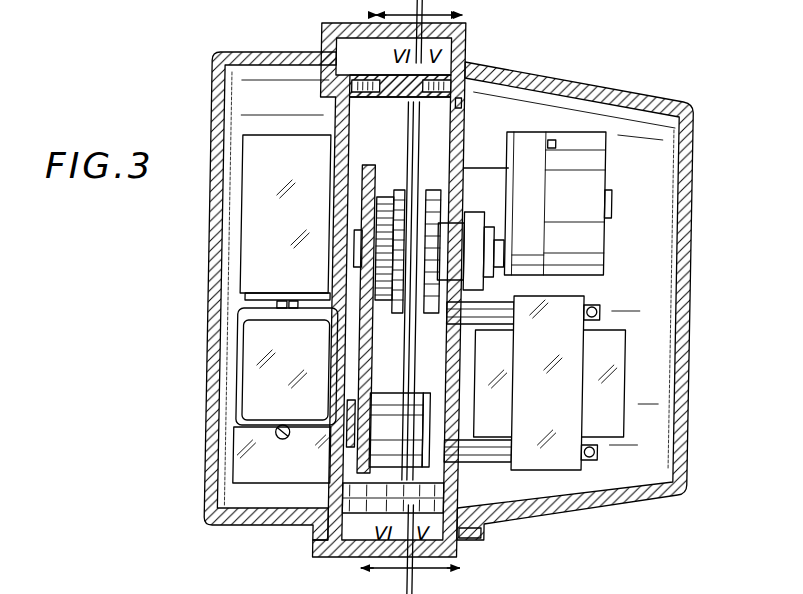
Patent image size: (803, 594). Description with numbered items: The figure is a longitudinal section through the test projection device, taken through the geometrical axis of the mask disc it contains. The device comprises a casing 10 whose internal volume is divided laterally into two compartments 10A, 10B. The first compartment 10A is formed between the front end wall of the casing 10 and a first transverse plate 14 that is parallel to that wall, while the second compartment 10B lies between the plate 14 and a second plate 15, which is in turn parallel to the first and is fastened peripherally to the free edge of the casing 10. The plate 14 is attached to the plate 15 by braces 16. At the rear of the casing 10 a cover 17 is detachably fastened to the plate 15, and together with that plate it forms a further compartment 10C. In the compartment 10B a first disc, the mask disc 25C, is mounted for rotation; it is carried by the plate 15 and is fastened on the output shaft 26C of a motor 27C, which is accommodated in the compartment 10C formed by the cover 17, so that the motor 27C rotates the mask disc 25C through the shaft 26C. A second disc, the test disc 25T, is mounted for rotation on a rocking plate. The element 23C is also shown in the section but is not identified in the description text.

The casing 10 is at (206, 66).
The first compartment 10A is at (244, 72).
The second compartment 10B is at (343, 47).
The compartment 10C is at (586, 105).
The first transverse plate 14 is at (337, 498).
The second plate 15 is at (463, 100).
The braces 16 is at (457, 106).
The cover 17 is at (694, 118).
The rack 23C is at (515, 538).
The mask disc 25C is at (400, 360).
The test disc 25T is at (400, 360).
The output shaft 26C is at (501, 228).
The motor 27C is at (598, 183).